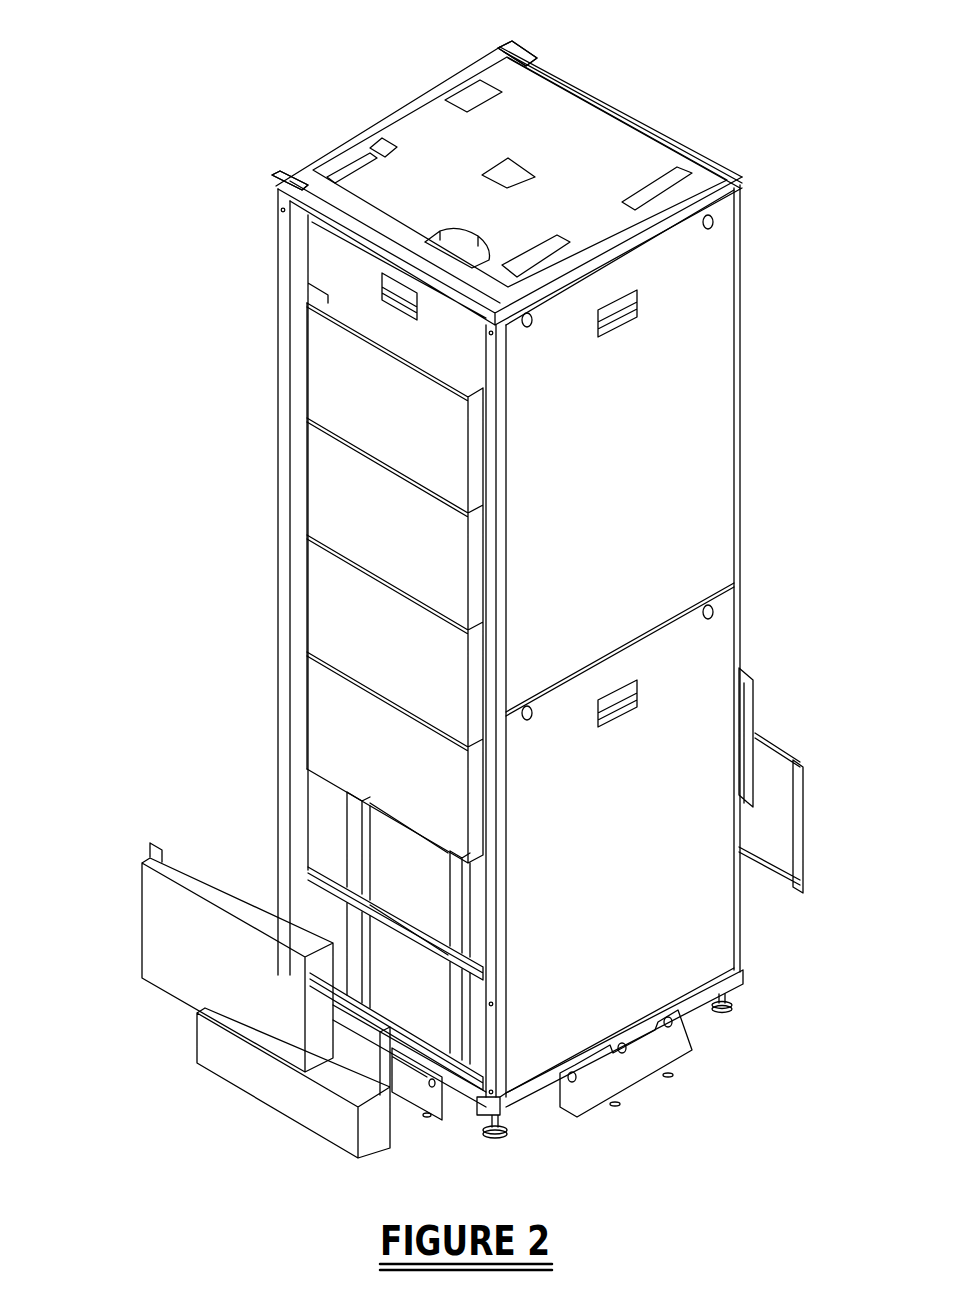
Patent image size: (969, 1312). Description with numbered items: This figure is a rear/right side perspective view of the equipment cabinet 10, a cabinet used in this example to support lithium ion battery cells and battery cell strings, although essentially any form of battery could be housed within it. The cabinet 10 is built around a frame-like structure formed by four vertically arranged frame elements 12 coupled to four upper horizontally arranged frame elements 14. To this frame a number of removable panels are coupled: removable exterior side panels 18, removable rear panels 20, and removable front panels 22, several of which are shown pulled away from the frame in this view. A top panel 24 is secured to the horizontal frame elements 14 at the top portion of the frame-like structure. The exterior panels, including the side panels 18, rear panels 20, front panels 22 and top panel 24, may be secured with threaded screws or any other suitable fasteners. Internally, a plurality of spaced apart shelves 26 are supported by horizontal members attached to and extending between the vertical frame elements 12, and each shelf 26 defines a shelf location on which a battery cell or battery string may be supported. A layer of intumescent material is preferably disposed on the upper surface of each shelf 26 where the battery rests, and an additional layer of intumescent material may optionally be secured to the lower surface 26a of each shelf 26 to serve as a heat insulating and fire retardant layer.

The equipment cabinet 10 is at (306, 68).
The vertically arranged frame elements 12 is at (286, 263).
The upper horizontally arranged frame elements 14 is at (324, 196).
The removable exterior side panels 18 is at (633, 395).
The removable rear panels 20 is at (370, 512).
The removable front panels 22 is at (779, 790).
The top panel 24 is at (583, 142).
The shelves 26 is at (315, 885).
The lower surface of shelf 26a is at (337, 875).